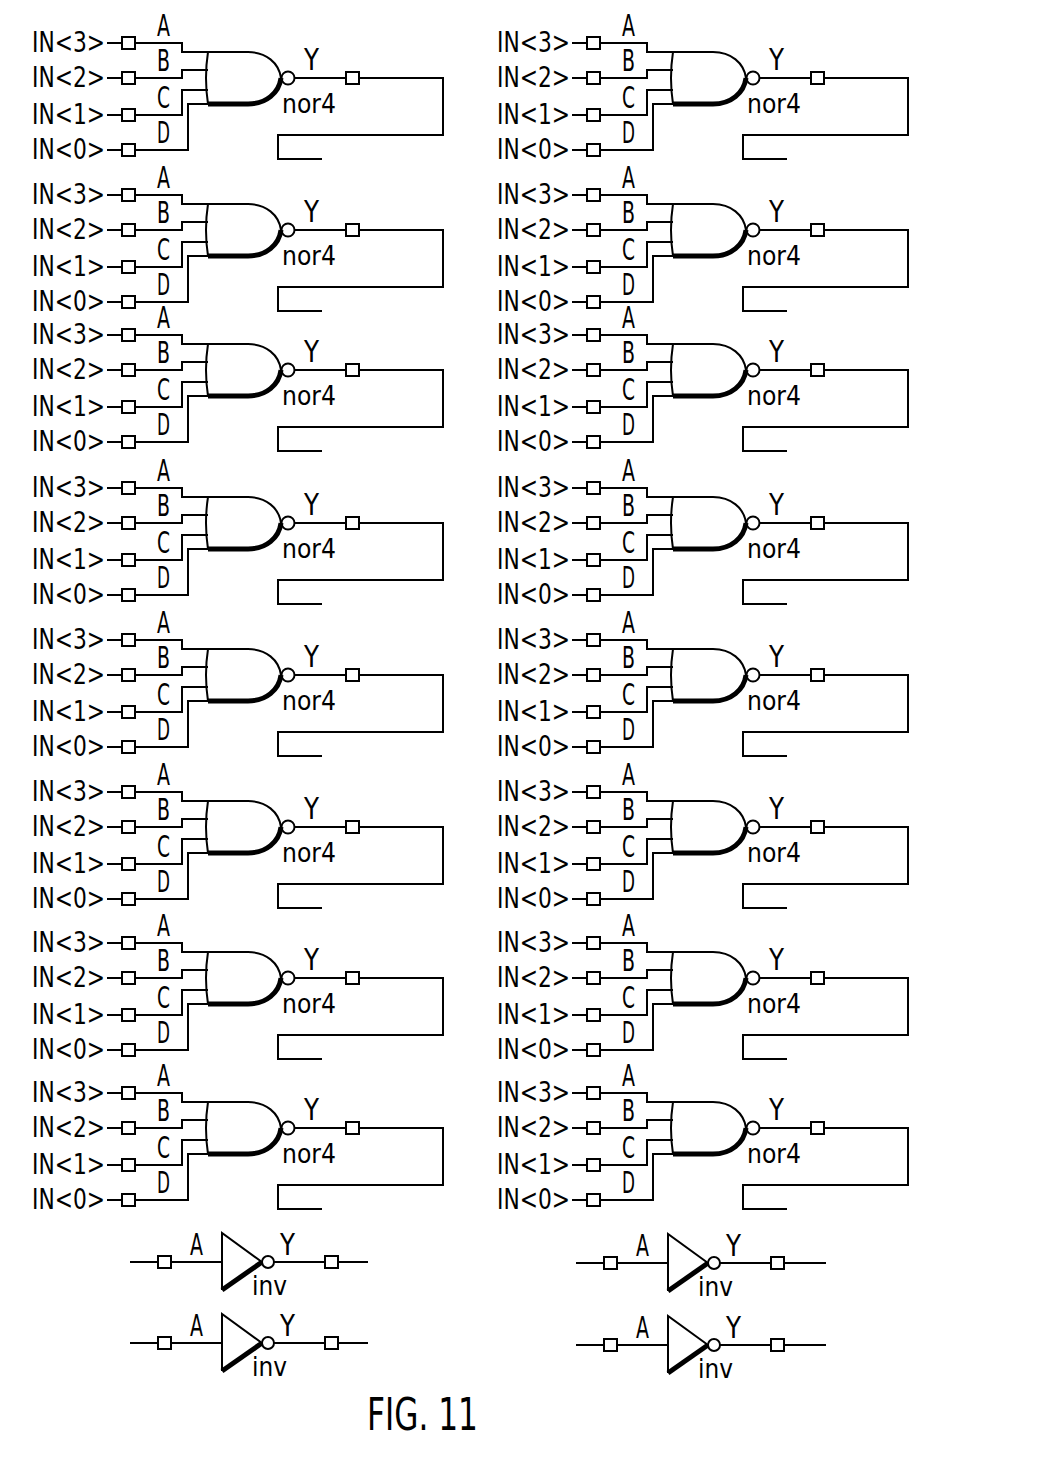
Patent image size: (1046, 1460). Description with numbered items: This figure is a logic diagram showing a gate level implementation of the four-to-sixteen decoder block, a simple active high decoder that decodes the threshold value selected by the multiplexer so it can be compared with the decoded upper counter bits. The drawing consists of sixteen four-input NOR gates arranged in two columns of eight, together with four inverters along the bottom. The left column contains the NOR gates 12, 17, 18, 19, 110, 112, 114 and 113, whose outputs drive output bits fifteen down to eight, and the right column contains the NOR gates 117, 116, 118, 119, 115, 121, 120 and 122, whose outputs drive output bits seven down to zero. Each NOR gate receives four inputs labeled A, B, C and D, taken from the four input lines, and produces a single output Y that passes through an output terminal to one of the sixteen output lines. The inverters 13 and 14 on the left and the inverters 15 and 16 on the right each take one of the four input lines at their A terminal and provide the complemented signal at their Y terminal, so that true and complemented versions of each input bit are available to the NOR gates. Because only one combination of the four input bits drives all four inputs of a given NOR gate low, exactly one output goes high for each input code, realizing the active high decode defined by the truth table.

The NOR gate 12 is at (240, 91).
The NOR gate 17 is at (240, 243).
The NOR gate 18 is at (240, 383).
The NOR gate 19 is at (240, 536).
The NOR gate 110 is at (240, 688).
The NOR gate 112 is at (240, 840).
The NOR gate 114 is at (237, 991).
The NOR gate 113 is at (237, 1141).
The NOR gate 117 is at (702, 91).
The NOR gate 116 is at (702, 243).
The NOR gate 118 is at (702, 383).
The NOR gate 119 is at (702, 536).
The NOR gate 115 is at (702, 688).
The NOR gate 121 is at (702, 840).
The NOR gate 120 is at (702, 991).
The NOR gate 122 is at (702, 1141).
The inverter 13 is at (246, 1258).
The inverter 14 is at (246, 1339).
The inverter 15 is at (695, 1259).
The inverter 16 is at (695, 1341).